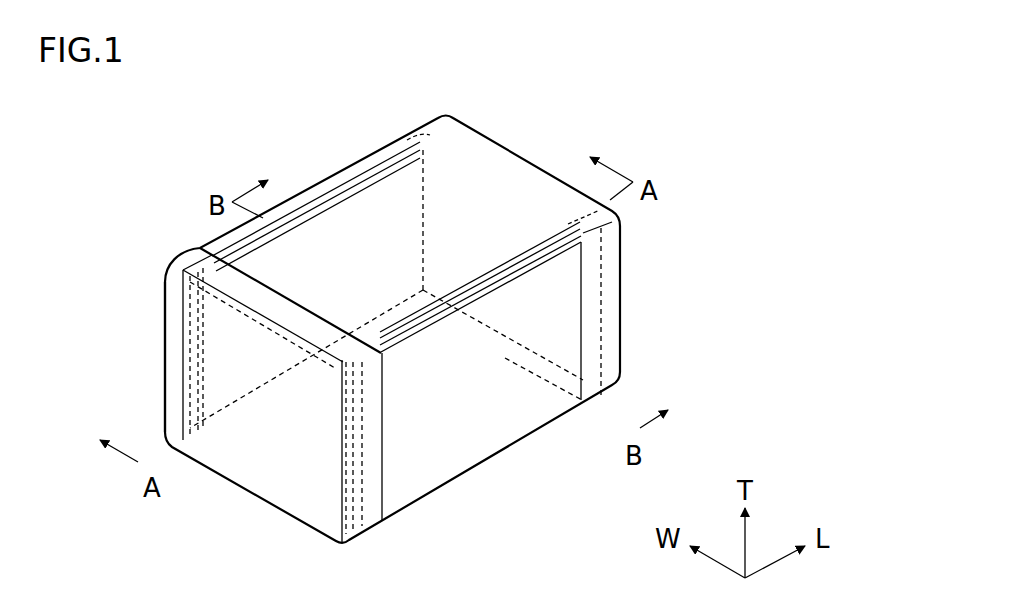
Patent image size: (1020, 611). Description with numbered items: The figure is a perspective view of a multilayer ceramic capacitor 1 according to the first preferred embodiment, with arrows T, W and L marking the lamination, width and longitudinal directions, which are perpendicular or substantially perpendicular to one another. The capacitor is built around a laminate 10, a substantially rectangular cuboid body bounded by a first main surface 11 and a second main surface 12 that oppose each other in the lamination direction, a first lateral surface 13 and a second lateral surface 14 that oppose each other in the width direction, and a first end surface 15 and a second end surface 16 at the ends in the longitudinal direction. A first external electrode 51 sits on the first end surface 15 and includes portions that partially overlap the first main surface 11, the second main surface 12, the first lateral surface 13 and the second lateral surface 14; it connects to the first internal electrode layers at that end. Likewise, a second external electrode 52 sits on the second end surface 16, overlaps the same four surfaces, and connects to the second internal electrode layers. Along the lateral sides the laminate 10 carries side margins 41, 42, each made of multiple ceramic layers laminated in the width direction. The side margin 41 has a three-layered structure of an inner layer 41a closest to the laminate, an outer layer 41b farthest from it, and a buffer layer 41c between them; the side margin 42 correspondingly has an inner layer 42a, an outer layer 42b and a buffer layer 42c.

The multilayer ceramic capacitor 1 is at (174, 152).
The laminate 10 is at (392, 178).
The first main surface 11 is at (453, 213).
The second main surface 12 is at (410, 460).
The first lateral surface 13 is at (348, 237).
The second lateral surface 14 is at (487, 412).
The first end surface 15 is at (267, 442).
The second end surface 16 is at (503, 226).
The side margin 41 is at (83, 198).
The inner layer 41a is at (220, 250).
The outer layer 41b is at (245, 236).
The buffer layer 41c is at (232, 246).
The side margin 42 is at (700, 222).
The inner layer 42a is at (560, 226).
The outer layer 42b is at (525, 275).
The buffer layer 42c is at (540, 258).
The first external electrode 51 is at (172, 326).
The second external electrode 52 is at (613, 325).